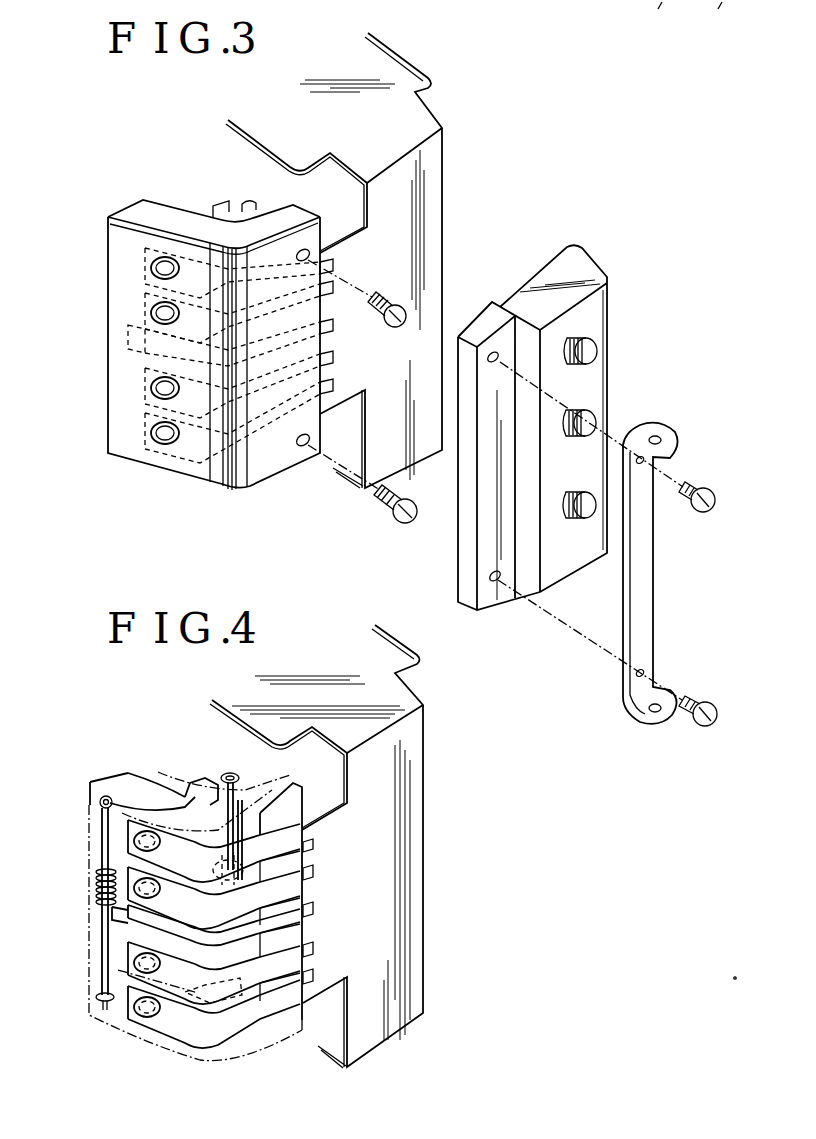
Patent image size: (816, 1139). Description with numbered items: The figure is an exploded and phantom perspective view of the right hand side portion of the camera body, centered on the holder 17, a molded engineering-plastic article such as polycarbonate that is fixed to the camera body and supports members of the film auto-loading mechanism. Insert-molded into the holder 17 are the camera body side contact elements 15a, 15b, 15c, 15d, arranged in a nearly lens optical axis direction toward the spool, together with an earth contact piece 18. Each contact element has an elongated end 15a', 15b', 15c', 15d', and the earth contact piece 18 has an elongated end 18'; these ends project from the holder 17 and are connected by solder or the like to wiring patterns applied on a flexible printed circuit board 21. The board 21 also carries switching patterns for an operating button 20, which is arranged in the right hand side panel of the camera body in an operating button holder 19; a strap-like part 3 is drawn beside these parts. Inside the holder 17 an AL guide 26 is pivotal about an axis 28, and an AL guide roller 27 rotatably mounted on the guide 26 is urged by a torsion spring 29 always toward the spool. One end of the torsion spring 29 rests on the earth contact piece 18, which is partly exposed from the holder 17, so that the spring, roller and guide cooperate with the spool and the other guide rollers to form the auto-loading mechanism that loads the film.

In FIG. 3, the mounting strap 3 is at (648, 578).
In FIG. 3, the contact element 15a is at (220, 449).
In FIG. 4, the contact element 15a is at (209, 1034).
In FIG. 3, the contact element 15b is at (189, 386).
In FIG. 4, the contact element 15b is at (172, 983).
In FIG. 3, the contact element 15c is at (189, 313).
In FIG. 4, the contact element 15c is at (172, 883).
In FIG. 3, the contact element 15d is at (189, 268).
In FIG. 4, the contact element 15d is at (172, 837).
In FIG. 3, the elongated end 15a' is at (360, 388).
In FIG. 4, the elongated end 15a' is at (340, 964).
In FIG. 3, the elongated end 15b' is at (360, 356).
In FIG. 4, the elongated end 15b' is at (340, 934).
In FIG. 3, the elongated end 15c' is at (360, 275).
In FIG. 4, the elongated end 15c' is at (340, 863).
In FIG. 3, the elongated end 15d' is at (360, 247).
In FIG. 4, the elongated end 15d' is at (340, 835).
In FIG. 3, the holder 17 is at (260, 470).
In FIG. 4, the holder 17 is at (200, 1047).
In FIG. 3, the earth contact piece 18 is at (190, 345).
In FIG. 4, the earth contact piece 18 is at (174, 928).
In FIG. 3, the elongated end 18' is at (346, 328).
In FIG. 4, the elongated end 18' is at (338, 898).
In FIG. 3, the operating button holder 19 is at (585, 312).
In FIG. 3, the operating button 20 is at (598, 352).
In FIG. 3, the flexible printed circuit board 21 is at (435, 177).
In FIG. 4, the flexible printed circuit board 21 is at (413, 838).
In FIG. 4, the AL guide 26 is at (168, 800).
In FIG. 4, the AL guide roller 27 is at (245, 800).
In FIG. 4, the axis 28 is at (104, 958).
In FIG. 4, the torsion spring 29 is at (97, 890).